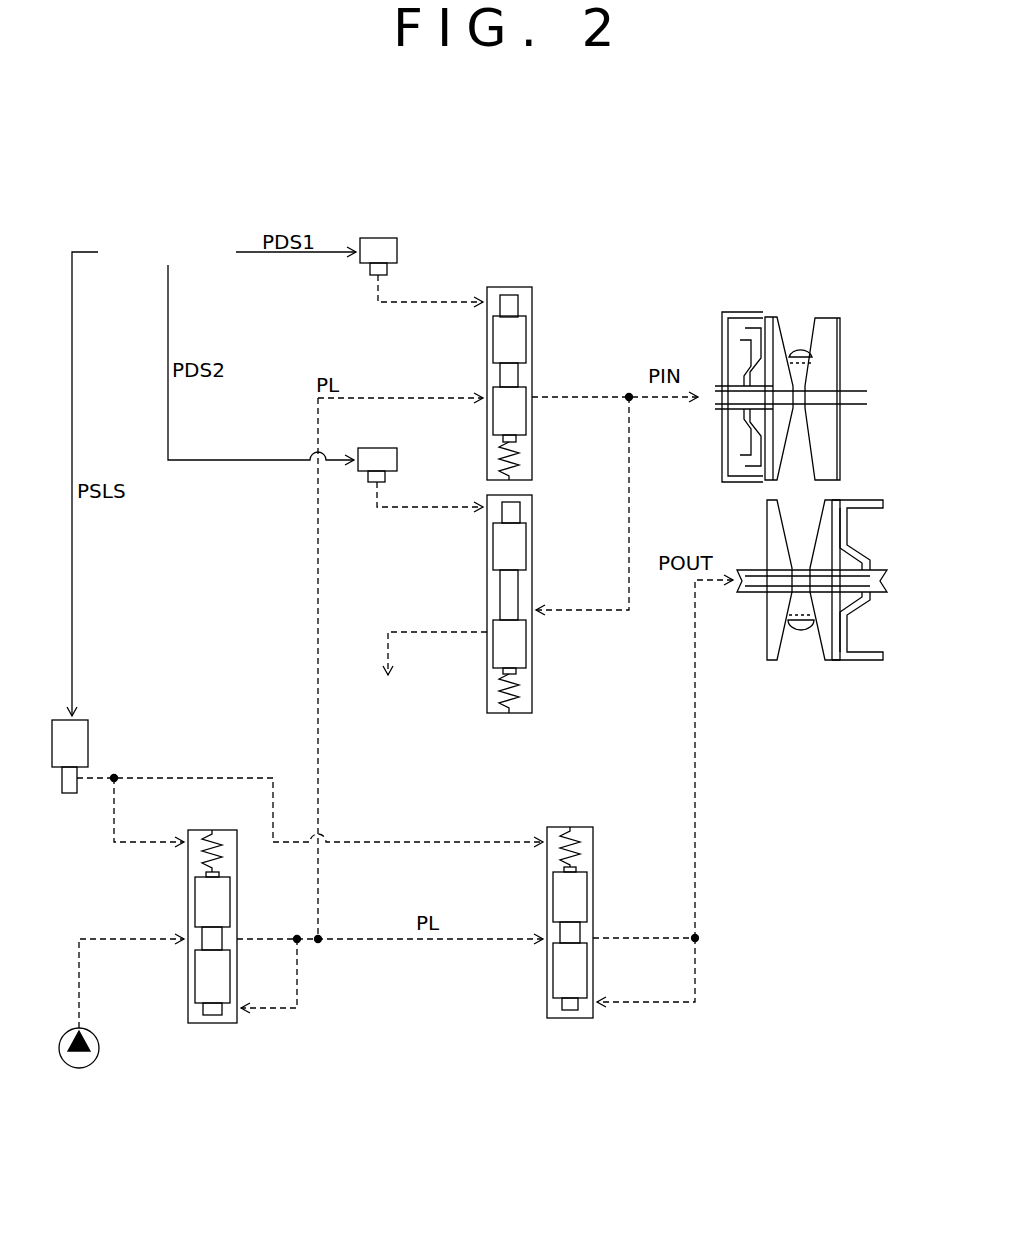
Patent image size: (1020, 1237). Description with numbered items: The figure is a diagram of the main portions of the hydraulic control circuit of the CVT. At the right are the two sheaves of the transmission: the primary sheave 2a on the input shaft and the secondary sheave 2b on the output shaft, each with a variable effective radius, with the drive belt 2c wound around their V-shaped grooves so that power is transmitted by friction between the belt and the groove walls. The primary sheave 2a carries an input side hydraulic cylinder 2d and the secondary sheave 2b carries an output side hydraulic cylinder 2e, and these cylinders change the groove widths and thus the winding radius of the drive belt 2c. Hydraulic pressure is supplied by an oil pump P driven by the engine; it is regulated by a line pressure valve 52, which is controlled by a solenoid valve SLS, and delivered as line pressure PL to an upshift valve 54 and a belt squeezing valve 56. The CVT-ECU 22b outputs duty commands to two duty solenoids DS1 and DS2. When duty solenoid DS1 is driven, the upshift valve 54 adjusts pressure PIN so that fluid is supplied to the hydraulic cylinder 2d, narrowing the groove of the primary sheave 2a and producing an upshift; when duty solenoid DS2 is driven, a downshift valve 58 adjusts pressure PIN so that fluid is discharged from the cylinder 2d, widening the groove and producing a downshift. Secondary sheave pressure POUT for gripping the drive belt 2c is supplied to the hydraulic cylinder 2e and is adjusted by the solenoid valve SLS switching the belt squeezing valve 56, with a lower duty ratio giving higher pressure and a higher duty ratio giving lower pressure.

The CVT-ECU 22b is at (203, 244).
The primary sheave 2a is at (778, 318).
The secondary sheave 2b is at (833, 658).
The drive belt 2c is at (801, 348).
The input side hydraulic cylinder 2d is at (752, 338).
The output side hydraulic cylinder 2e is at (843, 632).
The line pressure valve 52 is at (212, 1023).
The upshift valve 54 is at (525, 287).
The belt squeezing valve 56 is at (587, 827).
The downshift valve 58 is at (525, 495).
The duty solenoid DS1 is at (397, 216).
The duty solenoid DS2 is at (397, 430).
The solenoid valve SLS is at (88, 742).
The oil pump P is at (99, 1048).